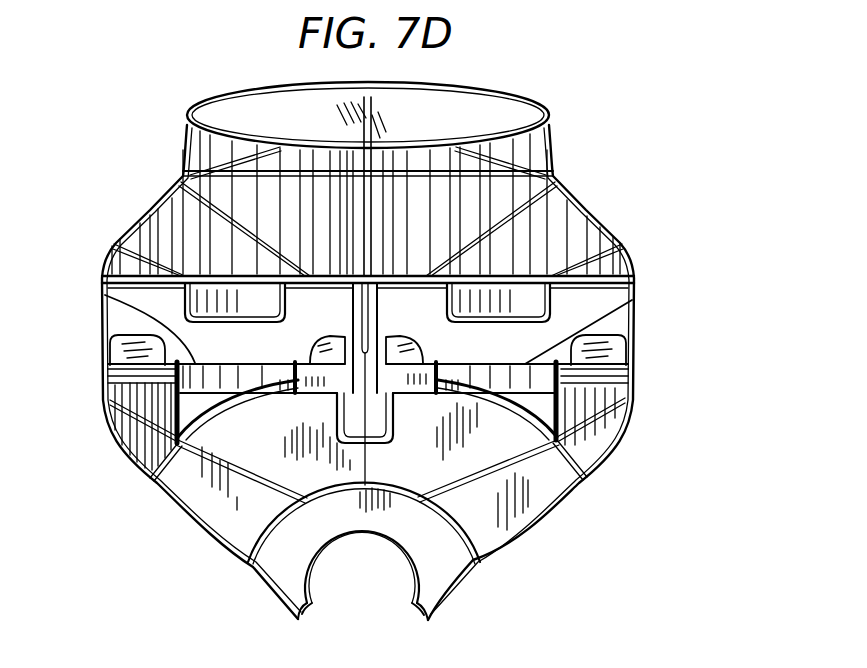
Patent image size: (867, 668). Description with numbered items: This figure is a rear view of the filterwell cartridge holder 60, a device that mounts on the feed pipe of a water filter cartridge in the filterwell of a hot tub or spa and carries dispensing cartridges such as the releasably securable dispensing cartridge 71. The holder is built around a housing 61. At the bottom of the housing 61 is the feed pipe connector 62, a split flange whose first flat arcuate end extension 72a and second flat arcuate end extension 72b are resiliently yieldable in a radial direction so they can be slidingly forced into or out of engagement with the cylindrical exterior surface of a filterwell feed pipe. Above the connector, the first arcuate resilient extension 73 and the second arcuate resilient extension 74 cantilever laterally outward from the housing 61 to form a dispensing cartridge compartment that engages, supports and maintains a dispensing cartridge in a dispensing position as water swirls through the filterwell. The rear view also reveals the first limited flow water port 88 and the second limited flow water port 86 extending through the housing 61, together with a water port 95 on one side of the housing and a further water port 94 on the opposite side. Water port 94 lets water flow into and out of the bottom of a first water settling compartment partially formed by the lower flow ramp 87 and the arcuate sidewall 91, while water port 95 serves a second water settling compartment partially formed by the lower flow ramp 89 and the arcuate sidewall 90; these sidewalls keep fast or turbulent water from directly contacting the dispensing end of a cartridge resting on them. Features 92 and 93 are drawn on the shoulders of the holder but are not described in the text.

The filterwell cartridge holder 60 is at (566, 100).
The housing 61 is at (572, 196).
The feed pipe connector 62 is at (363, 588).
The dispensing cartridge 71 is at (110, 335).
The first flat arcuate end extension 72a is at (297, 622).
The second flat arcuate end extension 72b is at (430, 622).
The first arcuate resilient extension 73 is at (605, 352).
The second arcuate resilient extension 74 is at (323, 340).
The second limited flow water port 86 is at (256, 355).
The lower flow ramp 87 is at (600, 421).
The first limited flow water port 88 is at (602, 320).
The lower flow ramp 89 is at (116, 401).
The arcuate sidewall 90 is at (176, 363).
The arcuate sidewall 91 is at (628, 384).
The left shoulder arc 92 is at (105, 298).
The right shoulder brace 93 is at (633, 303).
The water port 94 is at (570, 392).
The water port 95 is at (137, 421).